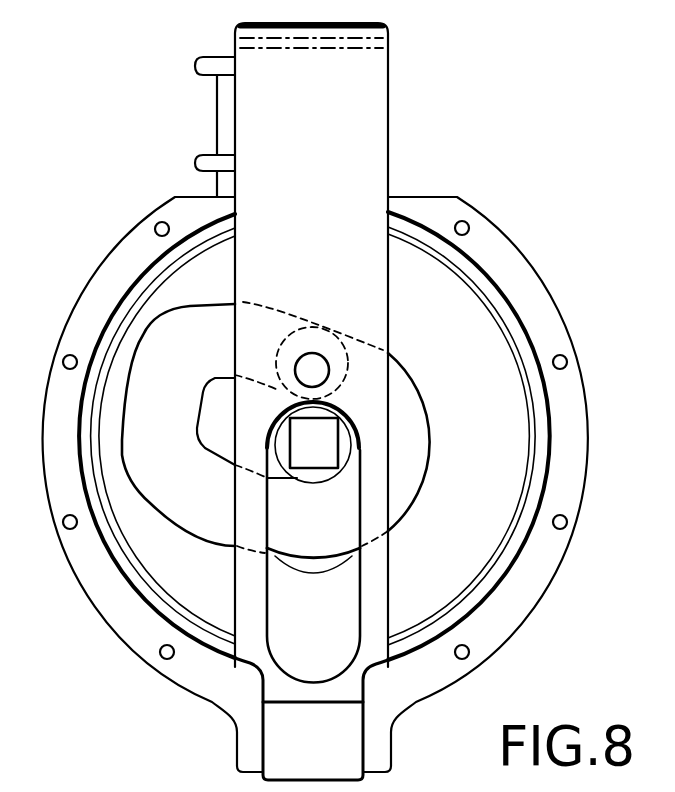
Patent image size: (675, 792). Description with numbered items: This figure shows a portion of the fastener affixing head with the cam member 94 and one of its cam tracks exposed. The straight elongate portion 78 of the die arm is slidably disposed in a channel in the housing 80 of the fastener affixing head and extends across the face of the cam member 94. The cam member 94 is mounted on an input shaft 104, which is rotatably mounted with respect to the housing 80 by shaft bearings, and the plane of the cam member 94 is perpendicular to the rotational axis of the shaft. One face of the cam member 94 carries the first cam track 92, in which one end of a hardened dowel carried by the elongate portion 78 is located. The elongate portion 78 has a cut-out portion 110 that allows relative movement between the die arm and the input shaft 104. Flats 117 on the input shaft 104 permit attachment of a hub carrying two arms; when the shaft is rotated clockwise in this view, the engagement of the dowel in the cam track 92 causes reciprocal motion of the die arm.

The elongate portion 78 is at (375, 153).
The housing 80 is at (524, 287).
The first cam track 92 is at (425, 419).
The cam member 94 is at (158, 553).
The input shaft 104 is at (349, 448).
The cut-out portion 110 is at (356, 598).
The flats 117 is at (349, 457).